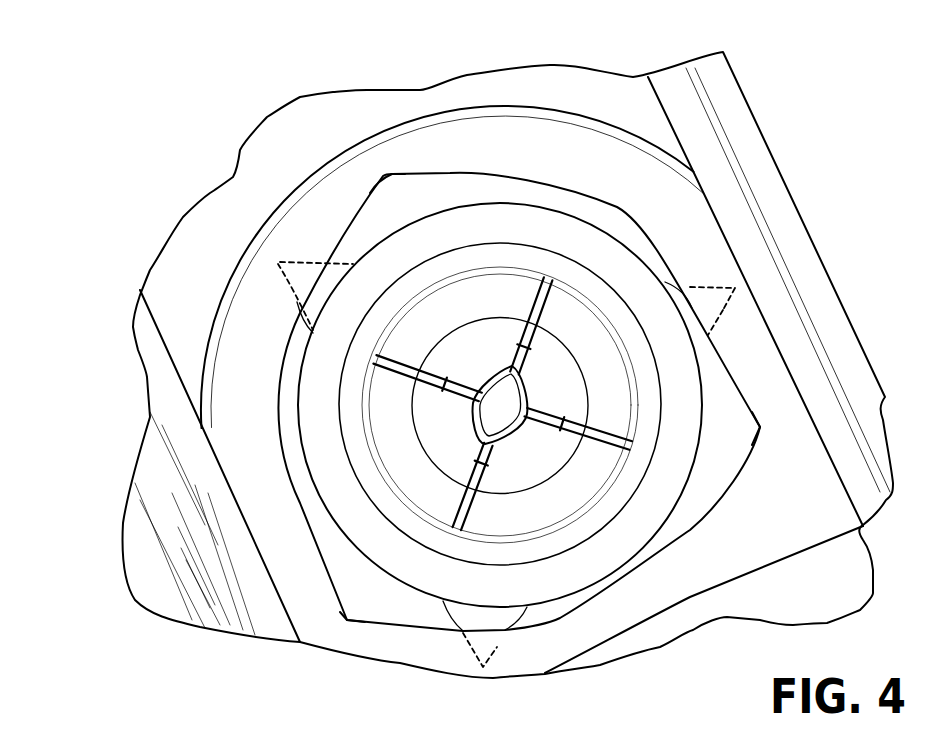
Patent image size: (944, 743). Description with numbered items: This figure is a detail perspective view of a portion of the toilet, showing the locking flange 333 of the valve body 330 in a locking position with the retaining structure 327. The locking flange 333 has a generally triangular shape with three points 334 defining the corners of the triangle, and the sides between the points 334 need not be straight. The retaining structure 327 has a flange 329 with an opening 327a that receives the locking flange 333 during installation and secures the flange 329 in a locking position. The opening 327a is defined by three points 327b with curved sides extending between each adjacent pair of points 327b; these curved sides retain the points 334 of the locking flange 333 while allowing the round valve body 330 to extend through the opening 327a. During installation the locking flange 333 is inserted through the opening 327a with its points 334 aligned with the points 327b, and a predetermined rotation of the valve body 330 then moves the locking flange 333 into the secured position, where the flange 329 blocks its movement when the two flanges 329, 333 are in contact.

The retaining structure 327 is at (282, 242).
The opening 327a is at (428, 193).
The points 327b is at (369, 170).
The flange 329 is at (250, 376).
The valve body 330 is at (530, 228).
The locking flange 333 is at (692, 307).
The points 334 is at (281, 266).